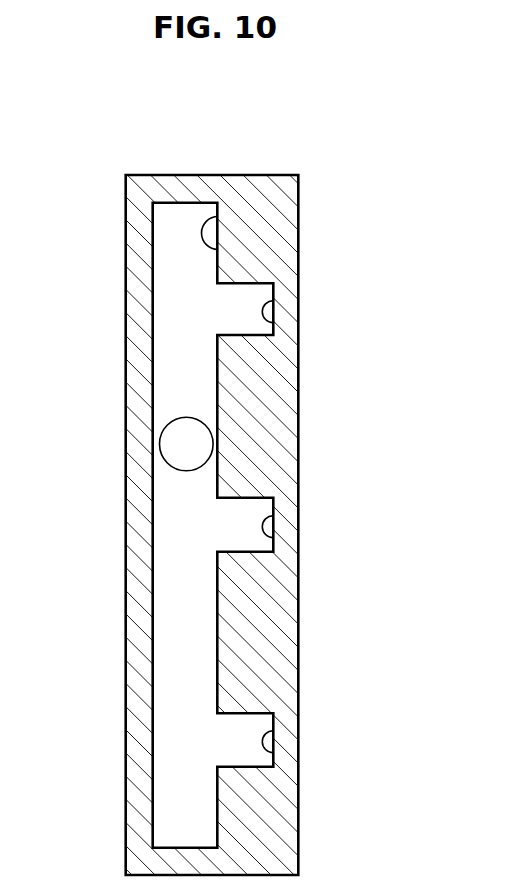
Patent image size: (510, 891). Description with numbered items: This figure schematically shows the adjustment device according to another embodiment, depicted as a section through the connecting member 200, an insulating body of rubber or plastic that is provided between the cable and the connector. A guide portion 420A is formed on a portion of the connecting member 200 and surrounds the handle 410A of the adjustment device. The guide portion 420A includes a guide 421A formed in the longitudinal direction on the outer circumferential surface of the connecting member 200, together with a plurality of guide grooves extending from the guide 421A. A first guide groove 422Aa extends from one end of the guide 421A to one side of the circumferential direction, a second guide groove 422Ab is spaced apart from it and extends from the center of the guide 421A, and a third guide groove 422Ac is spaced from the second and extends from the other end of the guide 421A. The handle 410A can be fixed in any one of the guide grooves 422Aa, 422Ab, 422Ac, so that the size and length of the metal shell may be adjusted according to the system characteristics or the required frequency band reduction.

The guide portion 420A is at (264, 172).
The connecting member 200 is at (287, 207).
The guide 421A is at (217, 252).
The first guide groove 422Aa is at (273, 323).
The second guide groove 422Ab is at (273, 537).
The third guide groove 422Ac is at (273, 753).
The handle 410A is at (170, 442).